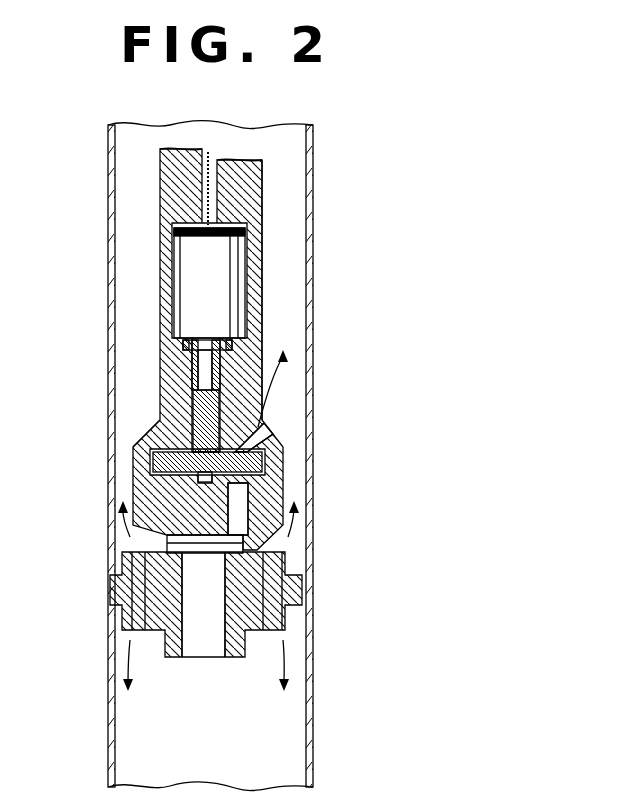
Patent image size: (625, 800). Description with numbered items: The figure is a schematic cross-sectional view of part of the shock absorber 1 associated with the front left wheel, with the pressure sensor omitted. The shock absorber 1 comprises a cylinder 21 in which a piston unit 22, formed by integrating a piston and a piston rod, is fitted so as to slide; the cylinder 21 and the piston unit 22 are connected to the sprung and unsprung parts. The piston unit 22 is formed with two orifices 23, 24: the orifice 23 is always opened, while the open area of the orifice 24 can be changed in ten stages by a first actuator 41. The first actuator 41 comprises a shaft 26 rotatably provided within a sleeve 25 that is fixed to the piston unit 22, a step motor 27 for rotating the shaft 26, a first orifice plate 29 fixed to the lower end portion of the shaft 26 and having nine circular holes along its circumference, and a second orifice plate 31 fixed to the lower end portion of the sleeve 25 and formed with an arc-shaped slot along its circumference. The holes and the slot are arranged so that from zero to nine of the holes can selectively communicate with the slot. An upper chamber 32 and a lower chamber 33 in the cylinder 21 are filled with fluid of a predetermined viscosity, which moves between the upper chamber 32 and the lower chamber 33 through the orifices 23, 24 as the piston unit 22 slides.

The shock absorber 1 is at (340, 236).
The cylinder 21 is at (313, 316).
The piston unit 22 is at (158, 358).
The orifice 23 is at (277, 597).
The orifice 24 is at (243, 497).
The sleeve 25 is at (196, 400).
The shaft 26 is at (160, 414).
The step motor 27 is at (185, 290).
The first orifice plate 29 is at (160, 479).
The second orifice plate 31 is at (265, 437).
The upper chamber 32 is at (282, 265).
The lower chamber 33 is at (243, 500).
The first actuator 41 is at (236, 388).